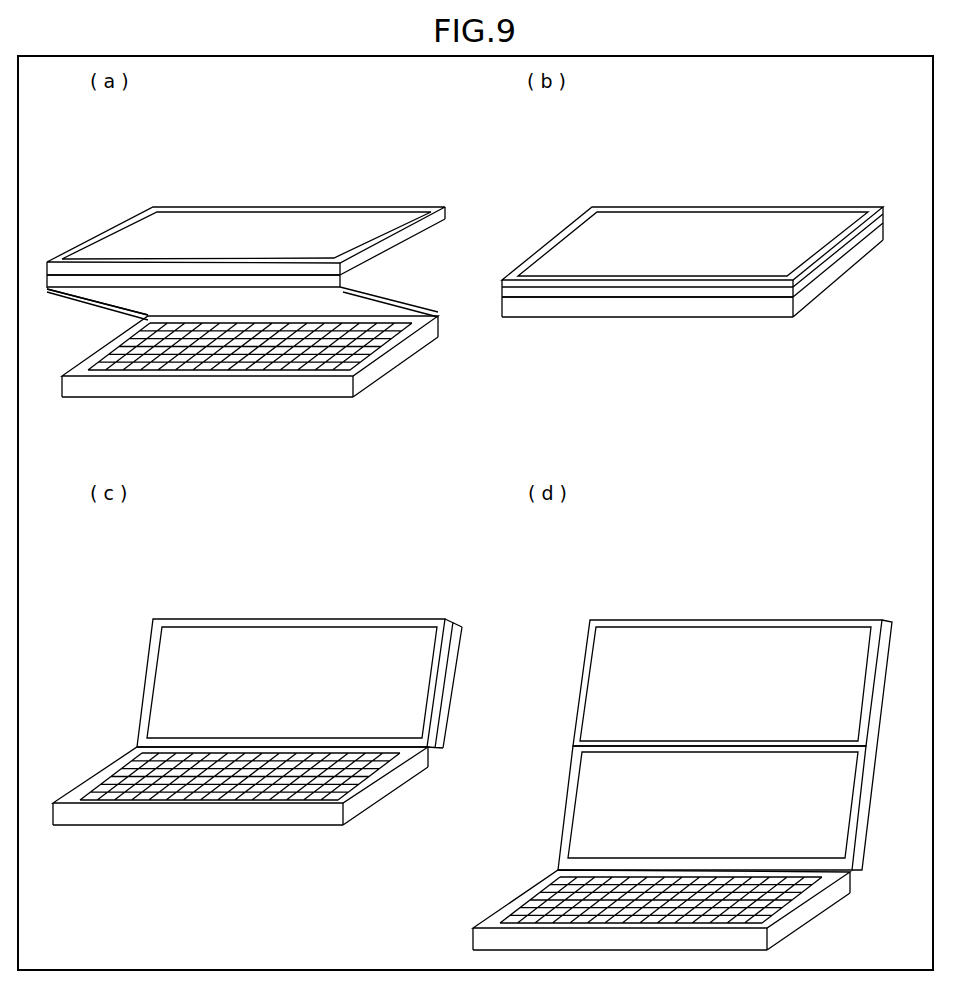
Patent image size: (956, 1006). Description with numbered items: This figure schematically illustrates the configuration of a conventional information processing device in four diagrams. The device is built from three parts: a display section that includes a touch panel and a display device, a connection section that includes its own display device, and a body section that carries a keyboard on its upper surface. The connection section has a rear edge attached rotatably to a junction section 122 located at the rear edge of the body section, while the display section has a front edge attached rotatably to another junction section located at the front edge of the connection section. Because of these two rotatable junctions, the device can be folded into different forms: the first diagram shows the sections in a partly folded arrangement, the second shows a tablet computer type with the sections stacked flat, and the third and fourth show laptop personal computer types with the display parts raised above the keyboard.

The junction section 122 is at (143, 317).